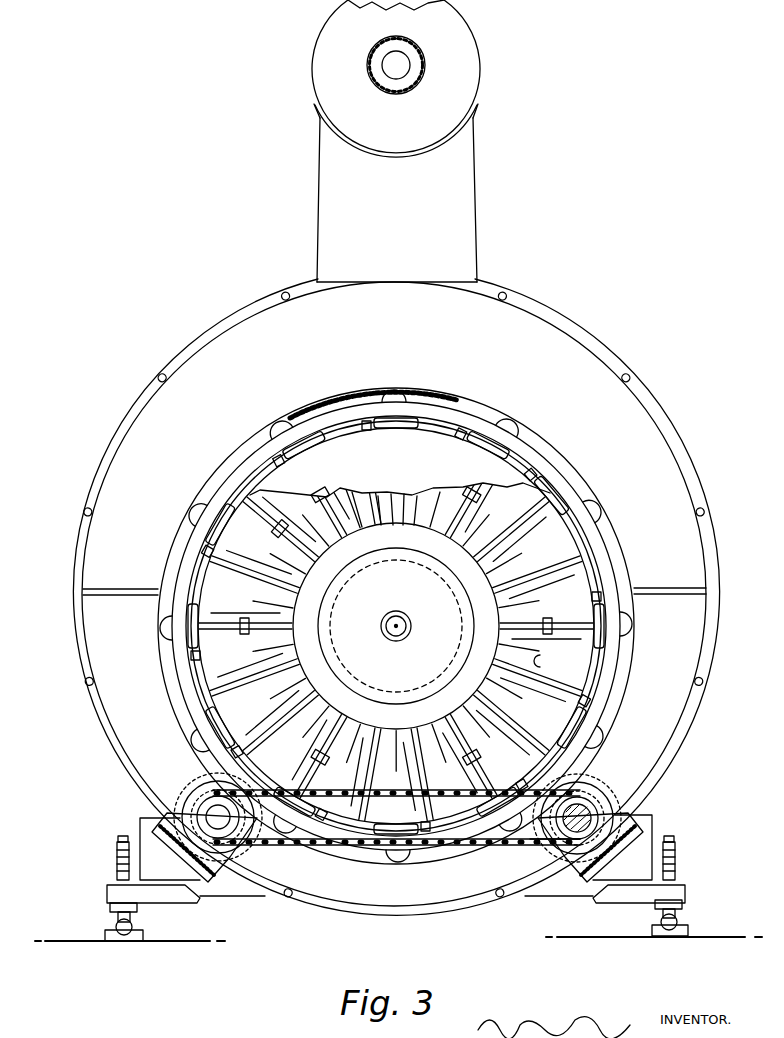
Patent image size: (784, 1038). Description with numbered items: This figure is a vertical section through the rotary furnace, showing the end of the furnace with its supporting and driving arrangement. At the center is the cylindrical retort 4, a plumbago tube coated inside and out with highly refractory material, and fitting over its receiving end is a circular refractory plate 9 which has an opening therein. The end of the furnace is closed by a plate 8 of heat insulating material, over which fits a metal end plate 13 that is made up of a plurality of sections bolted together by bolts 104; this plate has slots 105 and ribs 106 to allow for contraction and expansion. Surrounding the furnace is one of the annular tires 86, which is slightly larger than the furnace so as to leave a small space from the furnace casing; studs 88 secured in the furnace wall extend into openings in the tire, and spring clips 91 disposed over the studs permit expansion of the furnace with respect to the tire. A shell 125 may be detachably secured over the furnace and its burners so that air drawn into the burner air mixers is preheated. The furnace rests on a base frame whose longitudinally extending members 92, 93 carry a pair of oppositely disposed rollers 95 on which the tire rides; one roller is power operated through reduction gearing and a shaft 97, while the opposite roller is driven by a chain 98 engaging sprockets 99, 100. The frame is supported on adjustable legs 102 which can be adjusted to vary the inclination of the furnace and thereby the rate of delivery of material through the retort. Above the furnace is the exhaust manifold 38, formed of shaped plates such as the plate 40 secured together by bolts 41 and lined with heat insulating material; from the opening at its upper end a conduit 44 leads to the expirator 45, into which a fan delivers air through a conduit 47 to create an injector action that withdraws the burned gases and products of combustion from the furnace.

The cylindrical retort 4 is at (337, 581).
The heat insulating end plate 8 is at (450, 464).
The circular refractory plate 9 is at (397, 572).
The metal end plate 13 is at (562, 554).
The exhaust manifold 38 is at (203, 332).
The exhaust manifold plate 40 is at (574, 347).
The bolts 41 is at (158, 377).
The conduit 44 is at (396, 193).
The expirator 45 is at (466, 56).
The air conduit 47 is at (367, 62).
The tire 86 is at (569, 486).
The studs 88 is at (290, 472).
The spring clips 91 is at (305, 443).
The longitudinally extending frame member 92 is at (178, 849).
The longitudinally extending frame member 93 is at (609, 851).
The rollers 95 is at (206, 796).
The shaft 97 is at (598, 805).
The chain 98 is at (470, 851).
The sprocket 99 is at (540, 845).
The sprocket 100 is at (257, 841).
The adjustable legs 102 is at (115, 867).
The bolts 104 is at (483, 510).
The slots 105 is at (443, 493).
The ribs 106 is at (271, 536).
The shell 125 is at (228, 458).